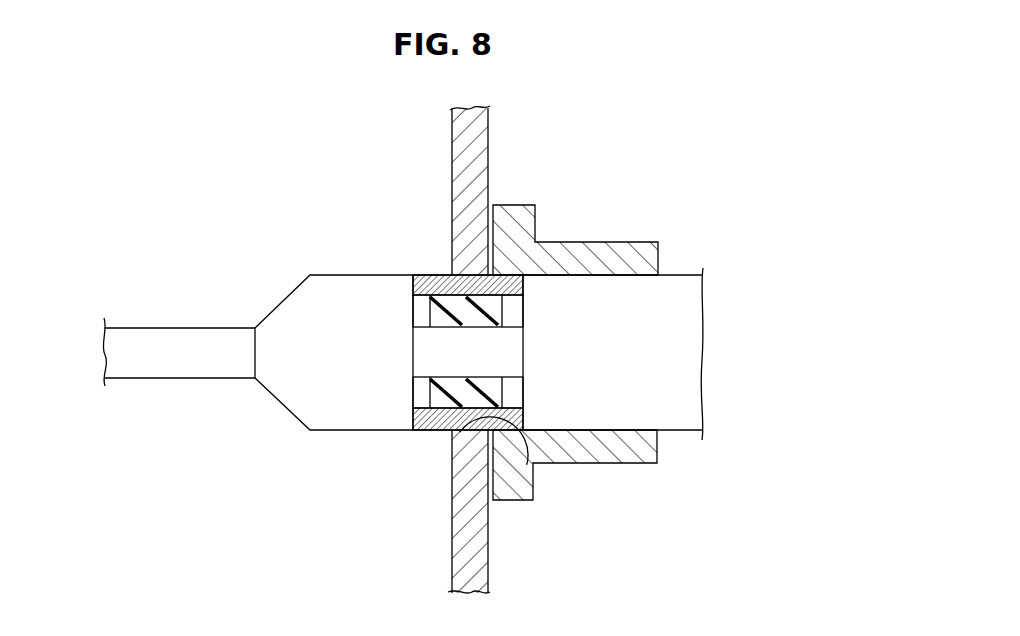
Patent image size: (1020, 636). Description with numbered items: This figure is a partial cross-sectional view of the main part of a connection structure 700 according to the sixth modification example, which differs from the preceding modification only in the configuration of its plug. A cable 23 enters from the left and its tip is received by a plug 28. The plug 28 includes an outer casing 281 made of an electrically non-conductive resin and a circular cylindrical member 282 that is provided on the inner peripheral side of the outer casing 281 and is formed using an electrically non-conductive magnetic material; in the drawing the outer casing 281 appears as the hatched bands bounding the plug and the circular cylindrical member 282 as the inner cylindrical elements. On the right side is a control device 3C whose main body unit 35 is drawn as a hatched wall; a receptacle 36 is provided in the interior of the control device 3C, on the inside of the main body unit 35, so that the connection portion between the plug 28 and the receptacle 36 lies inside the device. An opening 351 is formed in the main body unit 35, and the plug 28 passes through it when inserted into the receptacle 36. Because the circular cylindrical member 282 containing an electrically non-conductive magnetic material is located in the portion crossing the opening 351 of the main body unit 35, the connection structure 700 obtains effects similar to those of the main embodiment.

The connection structure 700 is at (438, 117).
The cable 23 is at (178, 327).
The plug 28 is at (378, 275).
The outer casing 281 is at (425, 432).
The circular cylindrical member 282 is at (500, 308).
The control device 3C is at (638, 162).
The main body unit 35 is at (488, 175).
The receptacle 36 is at (593, 242).
The opening 351 is at (532, 466).